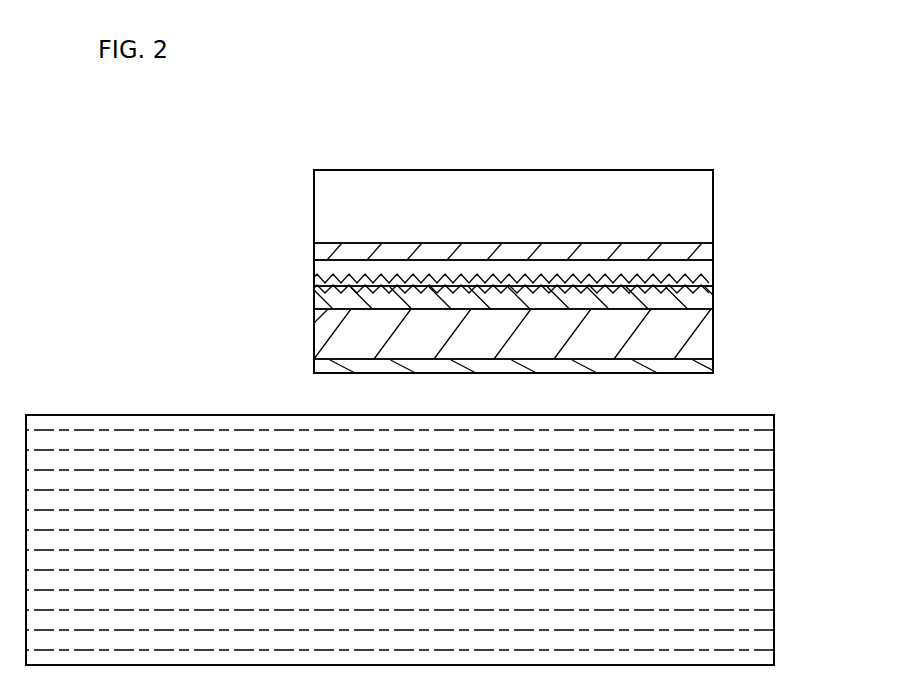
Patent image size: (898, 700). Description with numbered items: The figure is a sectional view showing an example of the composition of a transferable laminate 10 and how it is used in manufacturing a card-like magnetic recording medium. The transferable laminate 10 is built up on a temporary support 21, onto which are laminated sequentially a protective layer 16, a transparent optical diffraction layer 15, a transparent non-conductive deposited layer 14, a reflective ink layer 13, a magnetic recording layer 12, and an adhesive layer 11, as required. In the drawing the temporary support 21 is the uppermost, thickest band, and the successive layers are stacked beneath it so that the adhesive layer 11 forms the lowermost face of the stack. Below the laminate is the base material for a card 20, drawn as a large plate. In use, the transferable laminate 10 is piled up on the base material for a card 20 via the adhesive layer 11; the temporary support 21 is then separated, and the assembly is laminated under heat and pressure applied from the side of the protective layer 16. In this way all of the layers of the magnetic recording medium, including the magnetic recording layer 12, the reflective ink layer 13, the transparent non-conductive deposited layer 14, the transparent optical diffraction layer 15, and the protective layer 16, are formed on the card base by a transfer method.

The transferable laminate 10 is at (497, 148).
The adhesive layer 11 is at (703, 366).
The magnetic recording layer 12 is at (700, 338).
The reflective ink layer 13 is at (703, 306).
The transparent non-conductive deposited layer 14 is at (703, 286).
The transparent optical diffraction layer 15 is at (703, 271).
The protective layer 16 is at (699, 252).
The base material for a card 20 is at (765, 540).
The temporary support 21 is at (703, 196).